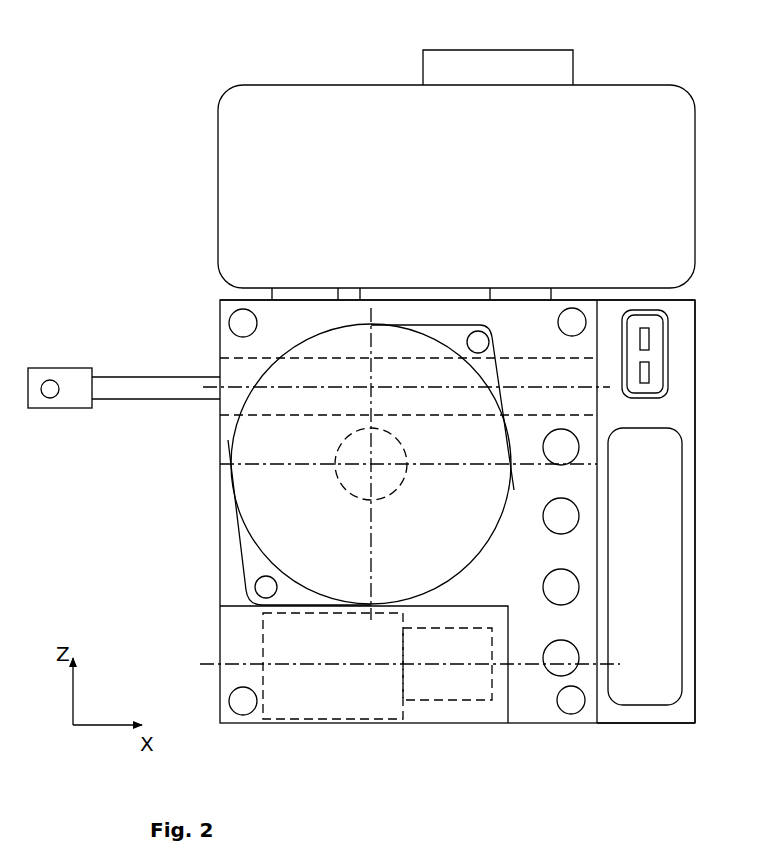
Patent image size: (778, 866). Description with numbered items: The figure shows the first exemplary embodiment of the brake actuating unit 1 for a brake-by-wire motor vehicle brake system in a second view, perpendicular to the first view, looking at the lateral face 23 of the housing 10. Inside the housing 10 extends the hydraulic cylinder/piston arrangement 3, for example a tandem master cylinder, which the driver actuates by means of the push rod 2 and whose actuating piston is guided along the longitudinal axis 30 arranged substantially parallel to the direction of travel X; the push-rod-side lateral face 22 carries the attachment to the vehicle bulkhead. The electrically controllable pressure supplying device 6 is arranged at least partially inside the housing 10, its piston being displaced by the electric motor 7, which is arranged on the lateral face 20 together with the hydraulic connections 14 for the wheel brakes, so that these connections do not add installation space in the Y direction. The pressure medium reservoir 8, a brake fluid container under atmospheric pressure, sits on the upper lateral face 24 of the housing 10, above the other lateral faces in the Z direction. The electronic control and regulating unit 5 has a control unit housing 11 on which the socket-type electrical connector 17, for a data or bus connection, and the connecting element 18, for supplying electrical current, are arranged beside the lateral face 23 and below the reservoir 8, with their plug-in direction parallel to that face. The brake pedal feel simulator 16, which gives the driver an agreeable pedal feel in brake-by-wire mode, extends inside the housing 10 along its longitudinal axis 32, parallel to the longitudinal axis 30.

The brake actuating unit 1 is at (198, 585).
The push rod 2 is at (145, 383).
The hydraulic cylinder/piston arrangement 3 is at (240, 362).
The electronic control and regulating unit 5 is at (647, 718).
The pressure supplying device 6 is at (333, 493).
The electric motor 7 is at (250, 437).
The pressure medium reservoir 8 is at (328, 102).
The housing 10 is at (407, 511).
The control unit housing 11 is at (678, 714).
The hydraulic connections 14 is at (548, 466).
The brake pedal feel simulator 16 is at (350, 700).
The electrical connector 17 is at (647, 680).
The connecting element 18 is at (613, 330).
The lateral face 20 is at (530, 708).
The lateral face 22 is at (216, 483).
The lateral face 23 is at (592, 350).
The upper lateral face 24 is at (359, 290).
The longitudinal axis 30 is at (555, 388).
The longitudinal axis 32 is at (258, 665).